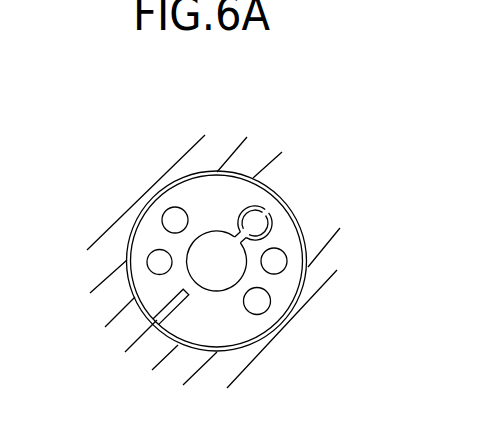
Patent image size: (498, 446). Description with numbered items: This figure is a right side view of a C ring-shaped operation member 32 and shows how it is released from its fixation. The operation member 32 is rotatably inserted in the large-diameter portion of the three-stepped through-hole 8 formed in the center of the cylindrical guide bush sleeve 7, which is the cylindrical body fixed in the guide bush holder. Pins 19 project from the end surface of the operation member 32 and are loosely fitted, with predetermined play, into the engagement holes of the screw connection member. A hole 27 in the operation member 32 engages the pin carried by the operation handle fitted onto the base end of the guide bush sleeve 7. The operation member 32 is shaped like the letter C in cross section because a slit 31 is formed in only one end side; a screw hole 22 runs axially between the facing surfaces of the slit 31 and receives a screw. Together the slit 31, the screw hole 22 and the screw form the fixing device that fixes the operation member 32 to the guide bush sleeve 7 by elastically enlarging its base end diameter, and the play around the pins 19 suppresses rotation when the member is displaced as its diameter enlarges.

The guide bush sleeve 7 is at (122, 236).
The through-hole 8 is at (165, 185).
The pins 19 is at (155, 262).
The screw hole 22 is at (273, 228).
The hole 27 is at (174, 218).
The slit 31 is at (269, 213).
The operation member 32 is at (223, 328).